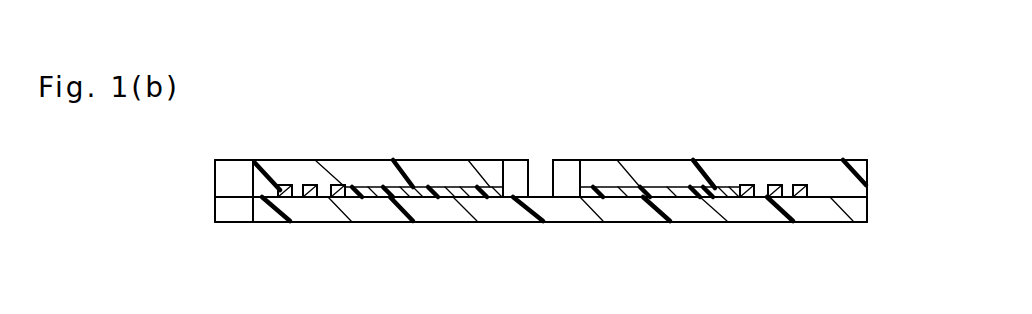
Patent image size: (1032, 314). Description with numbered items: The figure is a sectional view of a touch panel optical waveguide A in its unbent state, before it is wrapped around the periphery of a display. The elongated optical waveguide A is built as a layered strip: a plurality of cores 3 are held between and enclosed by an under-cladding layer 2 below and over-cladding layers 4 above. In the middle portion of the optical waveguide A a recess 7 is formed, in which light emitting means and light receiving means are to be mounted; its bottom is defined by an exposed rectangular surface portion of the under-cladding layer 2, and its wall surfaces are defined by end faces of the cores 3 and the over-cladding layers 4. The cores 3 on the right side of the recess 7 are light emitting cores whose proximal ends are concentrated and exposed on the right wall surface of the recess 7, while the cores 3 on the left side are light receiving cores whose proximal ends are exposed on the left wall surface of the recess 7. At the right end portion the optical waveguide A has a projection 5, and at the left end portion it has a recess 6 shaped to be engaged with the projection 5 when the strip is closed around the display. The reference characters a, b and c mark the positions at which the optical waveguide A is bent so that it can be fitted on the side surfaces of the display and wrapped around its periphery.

The under-cladding layer 2 is at (326, 210).
The cores 3 is at (311, 186).
The over-cladding layers 4 is at (438, 165).
The projection 5 is at (856, 166).
The recess 6 is at (231, 182).
The recess 7 is at (546, 168).
The optical waveguide A is at (516, 150).
The bending position a is at (379, 237).
The bending position b is at (542, 237).
The bending position c is at (706, 237).